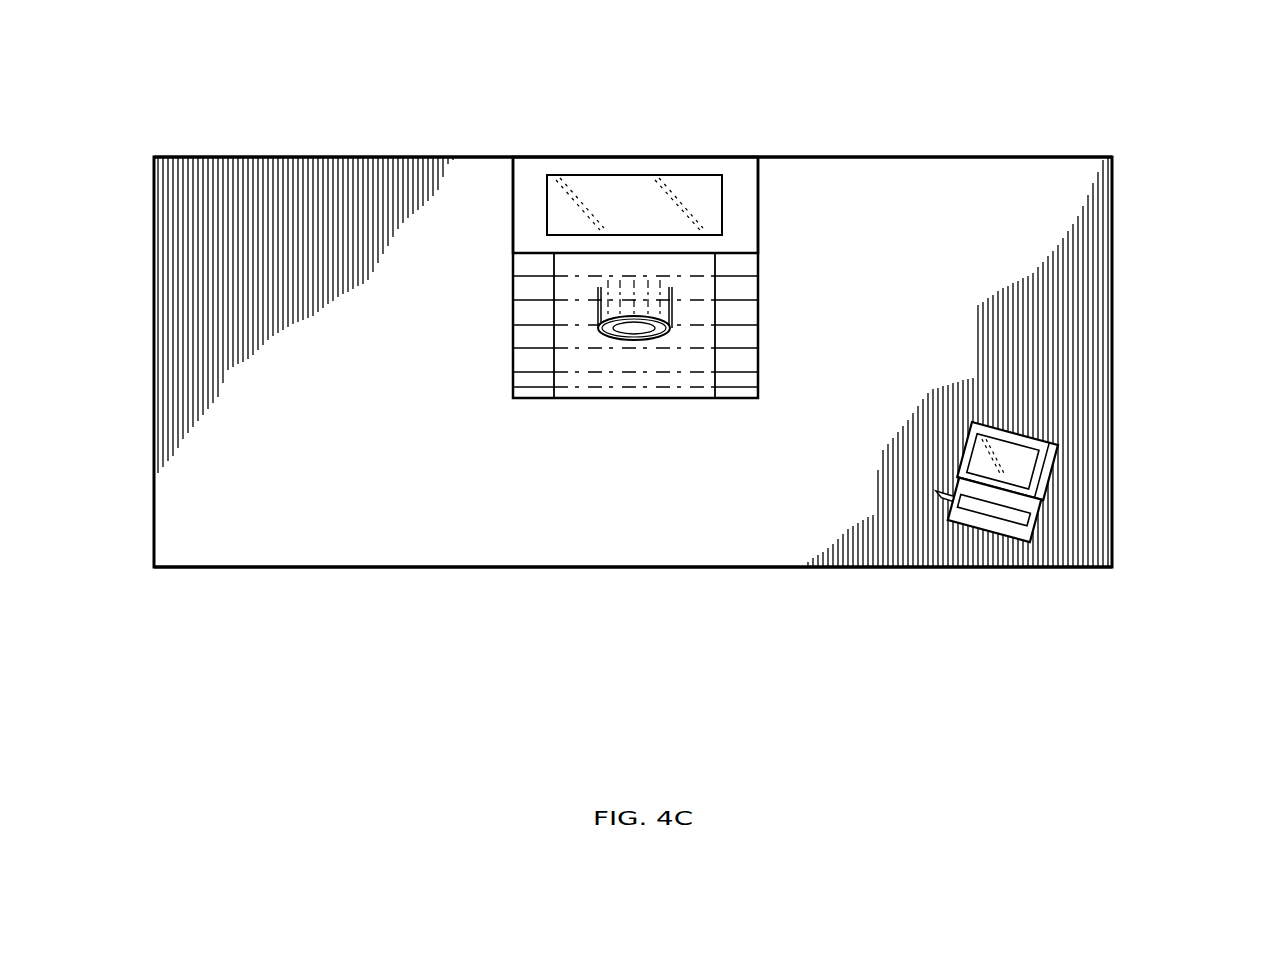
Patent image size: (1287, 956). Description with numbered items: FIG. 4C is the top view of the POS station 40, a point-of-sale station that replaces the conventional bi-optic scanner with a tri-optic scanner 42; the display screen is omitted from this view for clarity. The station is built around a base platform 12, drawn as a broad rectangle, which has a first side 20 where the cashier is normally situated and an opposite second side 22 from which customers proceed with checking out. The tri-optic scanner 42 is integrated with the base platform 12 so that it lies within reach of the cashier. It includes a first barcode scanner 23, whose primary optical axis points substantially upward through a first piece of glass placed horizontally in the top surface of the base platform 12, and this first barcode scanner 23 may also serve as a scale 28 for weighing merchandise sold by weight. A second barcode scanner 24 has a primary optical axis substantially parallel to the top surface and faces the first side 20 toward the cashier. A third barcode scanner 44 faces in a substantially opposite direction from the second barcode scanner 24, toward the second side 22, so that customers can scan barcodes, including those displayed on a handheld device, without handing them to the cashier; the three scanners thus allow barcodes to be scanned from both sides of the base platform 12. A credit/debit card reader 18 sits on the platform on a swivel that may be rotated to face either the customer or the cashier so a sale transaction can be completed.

The POS station 40 is at (1203, 73).
The base platform 12 is at (1113, 250).
The first side 20 is at (838, 157).
The second side 22 is at (292, 568).
The tri-optic scanner 42 is at (513, 197).
The scale 28 is at (740, 186).
The first barcode scanner 23 is at (625, 192).
The second barcode scanner 24 is at (690, 268).
The third barcode scanner 44 is at (623, 330).
The credit/debit card reader 18 is at (1048, 478).